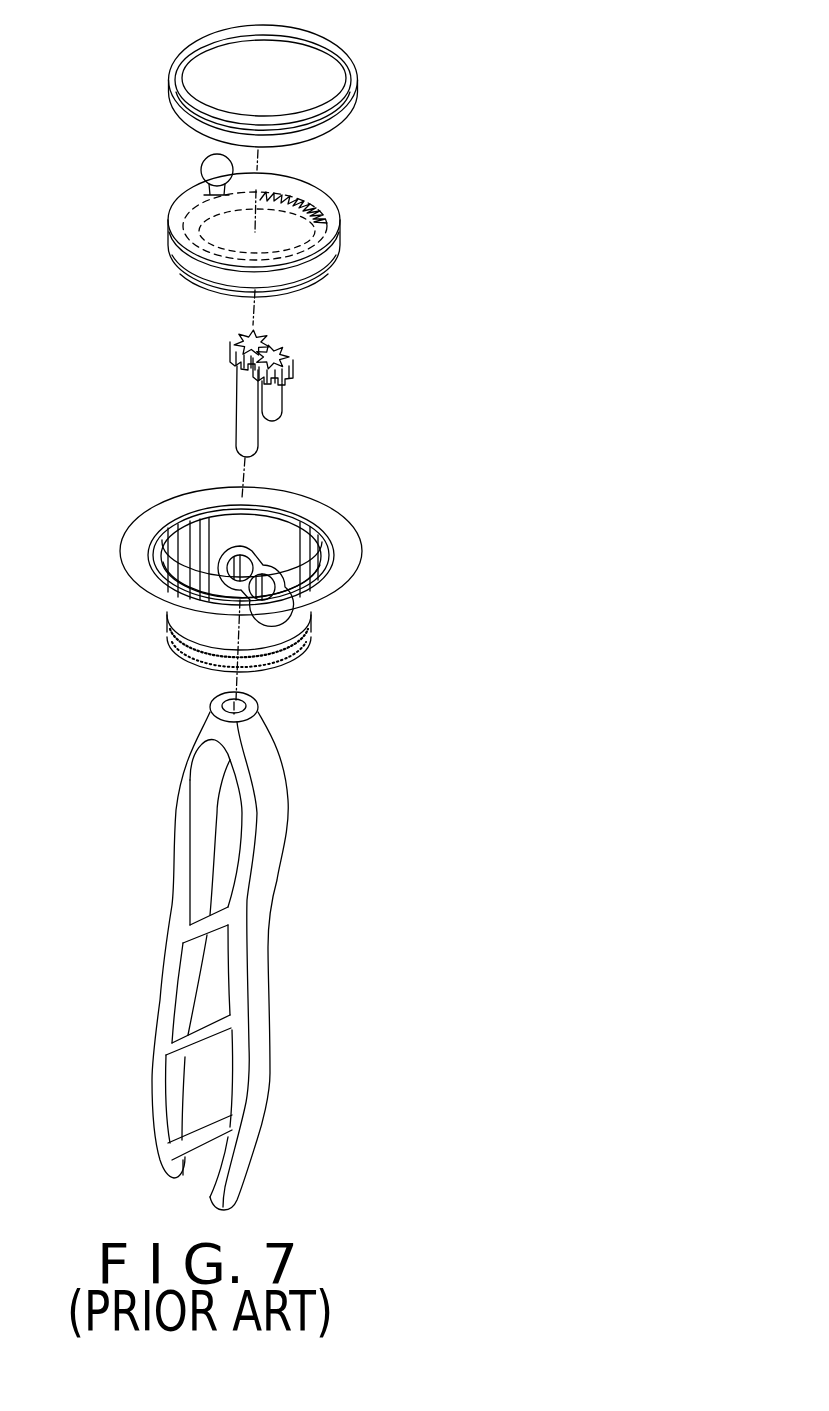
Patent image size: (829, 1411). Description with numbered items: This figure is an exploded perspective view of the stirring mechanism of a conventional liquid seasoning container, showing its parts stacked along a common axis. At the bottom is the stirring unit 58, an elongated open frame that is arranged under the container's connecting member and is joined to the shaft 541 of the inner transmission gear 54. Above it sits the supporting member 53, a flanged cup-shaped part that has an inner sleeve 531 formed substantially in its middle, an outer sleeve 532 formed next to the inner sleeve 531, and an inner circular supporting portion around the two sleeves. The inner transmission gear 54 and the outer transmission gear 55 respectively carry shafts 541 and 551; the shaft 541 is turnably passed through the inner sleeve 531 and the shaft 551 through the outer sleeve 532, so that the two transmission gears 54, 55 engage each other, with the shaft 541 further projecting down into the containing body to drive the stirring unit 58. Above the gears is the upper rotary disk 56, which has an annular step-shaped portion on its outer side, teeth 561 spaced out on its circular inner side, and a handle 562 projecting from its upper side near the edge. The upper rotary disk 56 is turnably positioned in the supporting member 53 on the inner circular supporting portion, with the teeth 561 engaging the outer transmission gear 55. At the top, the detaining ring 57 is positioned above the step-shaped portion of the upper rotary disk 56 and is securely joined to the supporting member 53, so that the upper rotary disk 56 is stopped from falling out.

The supporting member 53 is at (300, 548).
The inner sleeve 531 is at (253, 558).
The outer sleeve 532 is at (283, 588).
The inner transmission gear 54 is at (188, 381).
The shaft 541 is at (238, 420).
The outer transmission gear 55 is at (326, 371).
The shaft 551 is at (273, 402).
The upper rotary disk 56 is at (318, 198).
The teeth 561 is at (335, 229).
The handle 562 is at (210, 171).
The detaining ring 57 is at (360, 80).
The stirring unit 58 is at (297, 753).